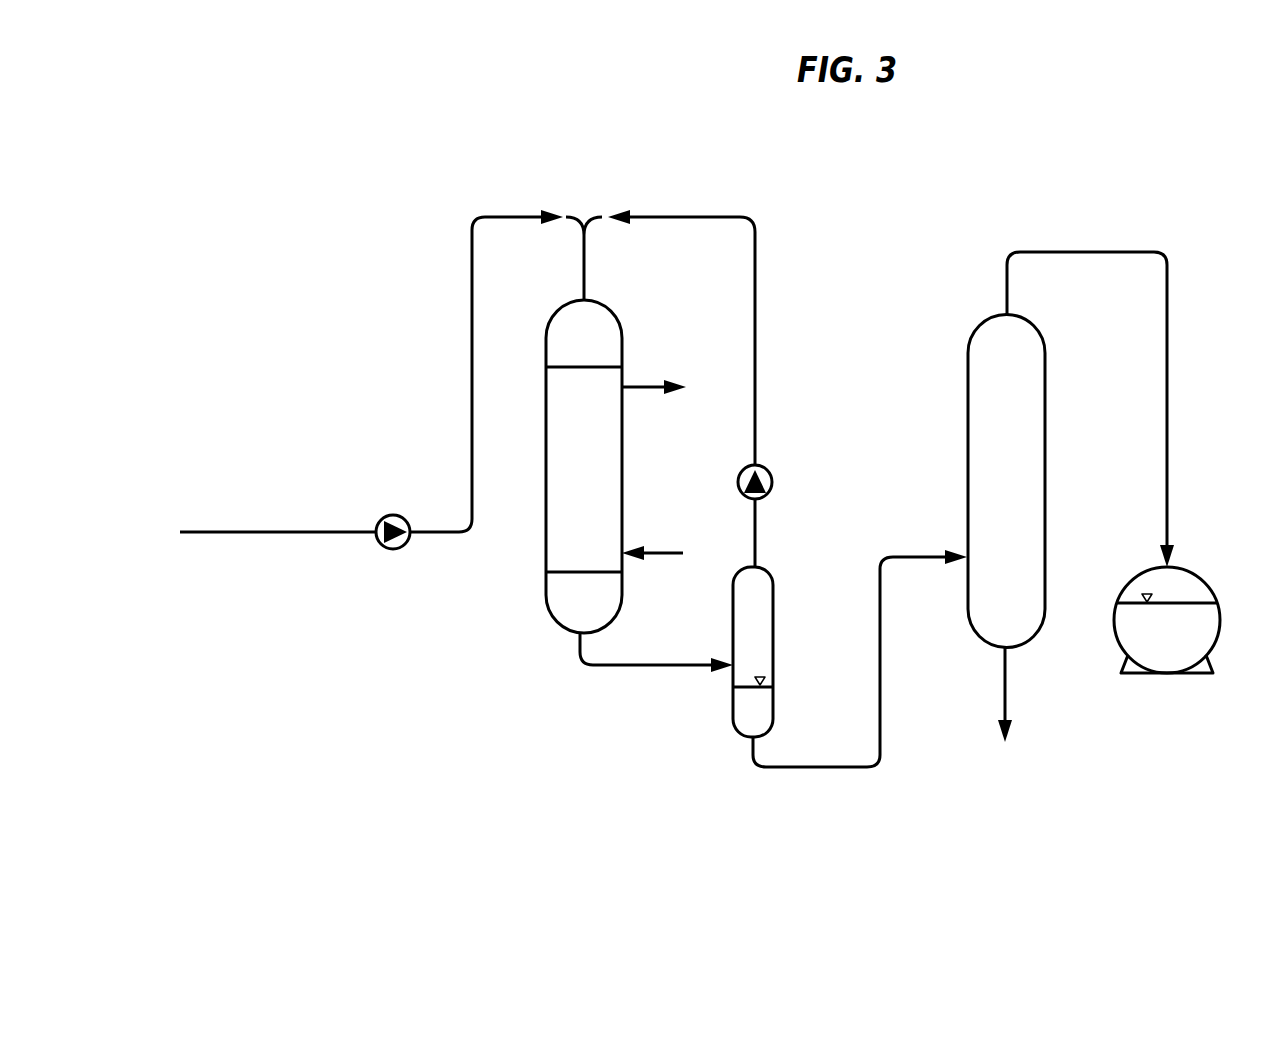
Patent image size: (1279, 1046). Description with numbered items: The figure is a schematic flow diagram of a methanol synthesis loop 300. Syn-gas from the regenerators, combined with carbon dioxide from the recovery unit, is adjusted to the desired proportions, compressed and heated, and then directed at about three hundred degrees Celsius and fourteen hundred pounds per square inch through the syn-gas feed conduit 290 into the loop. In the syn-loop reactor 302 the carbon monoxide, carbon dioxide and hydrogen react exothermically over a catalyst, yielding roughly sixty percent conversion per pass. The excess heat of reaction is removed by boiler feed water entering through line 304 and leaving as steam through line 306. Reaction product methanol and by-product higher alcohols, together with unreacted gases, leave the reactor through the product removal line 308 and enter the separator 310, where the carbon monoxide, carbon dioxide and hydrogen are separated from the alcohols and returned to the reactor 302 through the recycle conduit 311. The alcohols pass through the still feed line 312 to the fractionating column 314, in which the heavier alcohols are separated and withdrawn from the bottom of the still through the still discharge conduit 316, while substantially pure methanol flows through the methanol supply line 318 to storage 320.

The methanol synthesis loop 300 is at (903, 262).
The syn-gas feed conduit 290 is at (363, 530).
The syn-loop reactor 302 is at (546, 605).
The boiler feed water inlet line 304 is at (658, 555).
The steam line 306 is at (640, 389).
The product removal line 308 is at (653, 668).
The separator 310 is at (731, 706).
The recycle conduit 311 is at (755, 362).
The still feed line 312 is at (884, 675).
The fractionating column 314 is at (966, 458).
The still discharge conduit 316 is at (1007, 692).
The methanol supply line 318 is at (1083, 252).
The storage 320 is at (1190, 637).